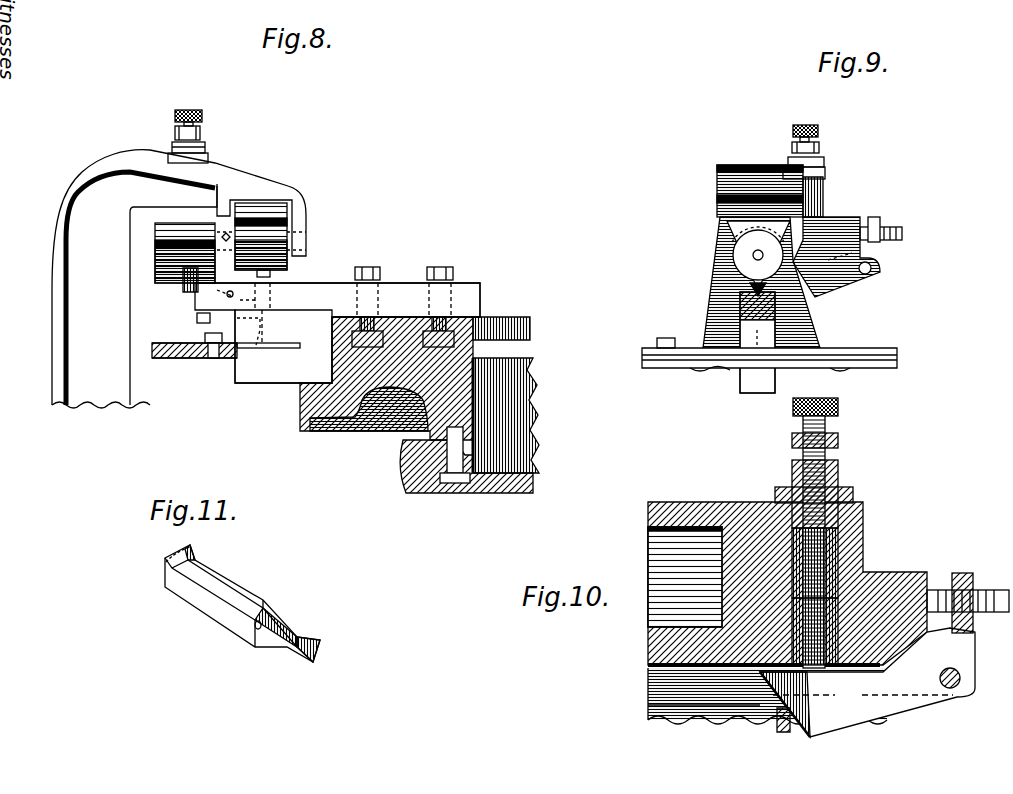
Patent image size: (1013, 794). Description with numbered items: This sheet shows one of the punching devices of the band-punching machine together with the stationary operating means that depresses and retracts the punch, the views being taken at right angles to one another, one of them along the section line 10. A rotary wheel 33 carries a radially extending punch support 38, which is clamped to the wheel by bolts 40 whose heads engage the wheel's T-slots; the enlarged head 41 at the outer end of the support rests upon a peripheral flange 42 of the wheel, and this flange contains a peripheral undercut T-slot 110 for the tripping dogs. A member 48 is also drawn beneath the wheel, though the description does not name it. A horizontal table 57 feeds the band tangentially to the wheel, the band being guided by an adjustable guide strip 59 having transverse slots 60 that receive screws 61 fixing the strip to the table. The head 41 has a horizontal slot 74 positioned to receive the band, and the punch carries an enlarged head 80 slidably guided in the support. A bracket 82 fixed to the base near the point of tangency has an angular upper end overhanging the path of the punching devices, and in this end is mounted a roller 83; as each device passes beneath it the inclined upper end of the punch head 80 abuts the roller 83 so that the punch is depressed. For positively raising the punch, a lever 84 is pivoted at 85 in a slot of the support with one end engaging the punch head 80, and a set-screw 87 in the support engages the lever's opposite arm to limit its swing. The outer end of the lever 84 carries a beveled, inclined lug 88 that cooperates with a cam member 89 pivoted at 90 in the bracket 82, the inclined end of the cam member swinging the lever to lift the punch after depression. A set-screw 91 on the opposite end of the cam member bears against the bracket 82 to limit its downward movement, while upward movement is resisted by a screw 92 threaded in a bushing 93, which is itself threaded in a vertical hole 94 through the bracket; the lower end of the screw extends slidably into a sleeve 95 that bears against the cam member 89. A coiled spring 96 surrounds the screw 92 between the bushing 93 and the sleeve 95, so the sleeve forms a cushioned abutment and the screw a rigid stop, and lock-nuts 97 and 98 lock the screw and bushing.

In FIG. 8, the section line 10 is at (188, 108).
In FIG. 8, the rotary wheel 33 is at (530, 352).
In FIG. 8, the punch support 38 is at (398, 288).
In FIG. 9, the punch support 38 is at (740, 306).
In FIG. 8, the bolts 40 is at (370, 267).
In FIG. 8, the enlarged head 41 is at (270, 375).
In FIG. 9, the enlarged head 41 is at (757, 385).
In FIG. 8, the peripheral flange 42 is at (330, 420).
In FIG. 8, the base member 48 is at (402, 478).
In FIG. 8, the horizontal table 57 is at (152, 352).
In FIG. 9, the horizontal table 57 is at (868, 373).
In FIG. 8, the adjustable guide strip 59 is at (195, 343).
In FIG. 9, the adjustable guide strip 59 is at (855, 349).
In FIG. 8, the transverse slots 60 is at (198, 358).
In FIG. 8, the screws 61 is at (190, 375).
In FIG. 9, the screws 61 is at (660, 338).
In FIG. 8, the horizontal slot 74 is at (300, 338).
In FIG. 8, the punch head 80 is at (337, 333).
In FIG. 9, the punch head 80 is at (735, 266).
In FIG. 8, the bracket 82 is at (64, 340).
In FIG. 9, the bracket 82 is at (722, 194).
In FIG. 10, the bracket 82 is at (700, 480).
In FIG. 8, the roller 83 is at (290, 232).
In FIG. 9, the roller 83 is at (735, 253).
In FIG. 8, the punch-retracting lever 84 is at (174, 288).
In FIG. 10, the punch-retracting lever 84 is at (777, 730).
In FIG. 11, the punch-retracting lever 84 is at (233, 596).
In FIG. 8, the pivot 85 is at (235, 290).
In FIG. 8, the set-screw 87 is at (197, 318).
In FIG. 10, the lug 88 is at (777, 720).
In FIG. 11, the lug 88 is at (195, 553).
In FIG. 8, the cam member 89 is at (160, 258).
In FIG. 9, the cam member 89 is at (838, 284).
In FIG. 10, the cam member 89 is at (903, 702).
In FIG. 9, the pivot 90 is at (871, 271).
In FIG. 10, the pivot 90 is at (950, 688).
In FIG. 9, the set-screw 91 is at (902, 232).
In FIG. 10, the set-screw 91 is at (1005, 580).
In FIG. 8, the screw 92 is at (203, 116).
In FIG. 9, the screw 92 is at (819, 128).
In FIG. 10, the screw 92 is at (825, 418).
In FIG. 8, the bushing 93 is at (205, 149).
In FIG. 9, the bushing 93 is at (825, 162).
In FIG. 10, the bushing 93 is at (838, 472).
In FIG. 10, the vertical hole 94 is at (863, 523).
In FIG. 10, the sleeve 95 is at (830, 663).
In FIG. 10, the coiled spring 96 is at (863, 545).
In FIG. 8, the lock-nut 97 is at (200, 133).
In FIG. 9, the lock-nut 97 is at (820, 146).
In FIG. 10, the lock-nut 97 is at (838, 442).
In FIG. 8, the lock-nut 98 is at (160, 157).
In FIG. 9, the lock-nut 98 is at (828, 175).
In FIG. 10, the lock-nut 98 is at (853, 494).
In FIG. 8, the peripheral undercut T-slot 110 is at (305, 432).